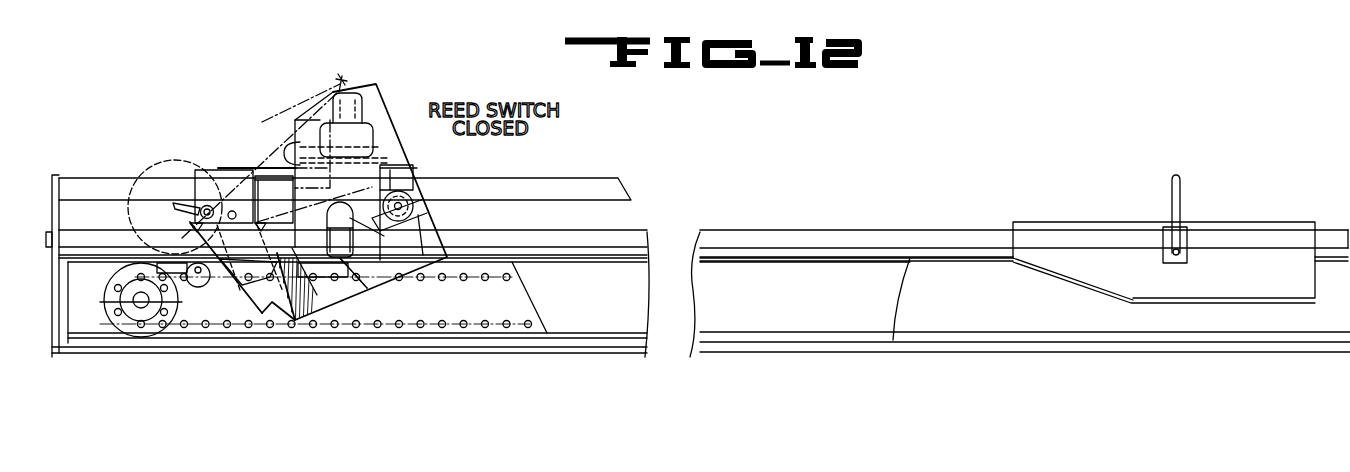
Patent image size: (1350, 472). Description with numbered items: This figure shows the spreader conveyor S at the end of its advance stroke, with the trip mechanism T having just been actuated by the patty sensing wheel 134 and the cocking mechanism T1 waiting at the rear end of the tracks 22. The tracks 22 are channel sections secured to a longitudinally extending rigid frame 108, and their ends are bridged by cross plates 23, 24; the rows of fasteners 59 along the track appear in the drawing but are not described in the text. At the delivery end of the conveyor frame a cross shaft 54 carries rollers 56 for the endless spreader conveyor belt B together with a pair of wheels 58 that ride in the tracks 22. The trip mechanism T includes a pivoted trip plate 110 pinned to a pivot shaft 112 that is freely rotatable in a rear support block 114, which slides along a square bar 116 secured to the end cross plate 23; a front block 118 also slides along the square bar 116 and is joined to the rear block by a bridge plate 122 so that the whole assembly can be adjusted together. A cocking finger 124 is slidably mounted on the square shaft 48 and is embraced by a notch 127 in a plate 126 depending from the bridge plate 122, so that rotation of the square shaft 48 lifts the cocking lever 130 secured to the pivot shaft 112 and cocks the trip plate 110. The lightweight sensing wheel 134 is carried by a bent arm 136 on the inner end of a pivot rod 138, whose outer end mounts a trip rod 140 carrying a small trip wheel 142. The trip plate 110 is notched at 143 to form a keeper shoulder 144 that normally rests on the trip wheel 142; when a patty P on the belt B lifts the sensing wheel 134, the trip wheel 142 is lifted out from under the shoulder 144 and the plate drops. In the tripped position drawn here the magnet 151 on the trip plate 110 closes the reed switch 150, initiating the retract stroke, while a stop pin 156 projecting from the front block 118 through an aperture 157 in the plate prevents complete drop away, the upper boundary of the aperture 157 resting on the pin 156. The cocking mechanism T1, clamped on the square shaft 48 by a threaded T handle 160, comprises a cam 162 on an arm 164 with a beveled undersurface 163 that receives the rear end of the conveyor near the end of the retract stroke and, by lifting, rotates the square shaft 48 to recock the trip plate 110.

The tracks 22 is at (538, 330).
The cross plate 23 is at (60, 174).
The cross plate 24 is at (1349, 203).
The square shaft 48 is at (717, 233).
The cross shaft 54 is at (118, 302).
The rollers 56 is at (135, 318).
The wheels 58 is at (115, 278).
The rivets 59 is at (483, 281).
The rigid frame 108 is at (688, 357).
The trip plate 110 is at (382, 101).
The pivot shaft 112 is at (410, 213).
The rear support block 114 is at (410, 180).
The square bar 116 is at (560, 181).
The front block 118 is at (230, 190).
The bridge plate 122 is at (238, 172).
The trip plate cocking finger 124 is at (362, 282).
The plate 126 is at (378, 168).
The notch 127 is at (384, 236).
The cocking lever 130 is at (338, 203).
The sensing wheel 134 is at (162, 162).
The bent arm 136 is at (186, 206).
The pivot rod 138 is at (199, 216).
The trip rod 140 is at (178, 241).
The trip wheel 142 is at (198, 287).
The notch 143 is at (287, 322).
The keeper shoulder 144 is at (268, 310).
The reed switch 150 is at (374, 140).
The magnet 151 is at (292, 121).
The stop pin 156 is at (236, 211).
The aperture 157 is at (257, 222).
The threaded T handle 160 is at (1177, 197).
The cam 162 is at (1268, 272).
The beveled undersurface 163 is at (1053, 273).
The arm 164 is at (1177, 264).
The trip mechanism T is at (402, 60).
The cocking mechanism T1 is at (1081, 190).
The spreader conveyor S is at (760, 168).
The patty P is at (243, 270).
The spreader conveyor belt B is at (515, 275).